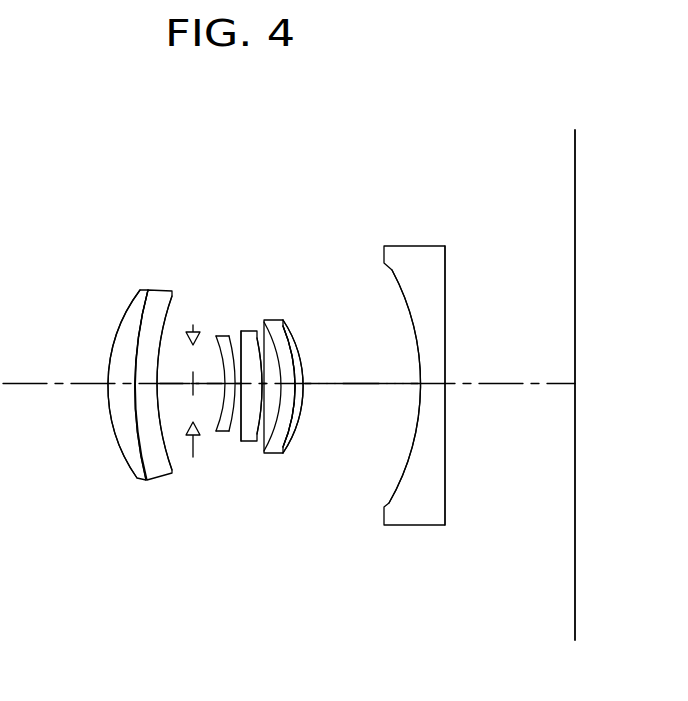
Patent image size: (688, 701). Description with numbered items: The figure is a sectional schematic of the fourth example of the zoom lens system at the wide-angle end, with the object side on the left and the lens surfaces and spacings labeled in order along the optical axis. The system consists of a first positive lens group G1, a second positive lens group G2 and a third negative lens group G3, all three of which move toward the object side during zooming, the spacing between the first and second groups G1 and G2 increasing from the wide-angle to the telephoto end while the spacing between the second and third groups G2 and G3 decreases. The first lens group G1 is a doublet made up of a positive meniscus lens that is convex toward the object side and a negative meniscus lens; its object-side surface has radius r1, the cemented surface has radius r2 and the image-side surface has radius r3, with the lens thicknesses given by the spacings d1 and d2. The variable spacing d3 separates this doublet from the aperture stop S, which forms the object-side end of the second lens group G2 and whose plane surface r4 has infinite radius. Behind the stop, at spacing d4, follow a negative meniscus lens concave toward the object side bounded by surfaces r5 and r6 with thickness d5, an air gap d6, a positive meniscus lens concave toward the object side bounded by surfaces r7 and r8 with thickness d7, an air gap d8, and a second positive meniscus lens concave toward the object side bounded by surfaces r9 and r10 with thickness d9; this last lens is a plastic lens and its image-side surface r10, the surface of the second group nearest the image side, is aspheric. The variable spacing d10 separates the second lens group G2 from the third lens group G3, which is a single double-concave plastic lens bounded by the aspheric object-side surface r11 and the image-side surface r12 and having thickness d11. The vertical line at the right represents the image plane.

The first positive lens group G1 is at (170, 215).
The second positive lens group G2 is at (287, 215).
The third negative lens group G3 is at (450, 218).
The aperture stop S is at (193, 325).
The radius of curvature of first lens surface r1 is at (117, 328).
The radius of curvature of second lens surface r2 is at (138, 320).
The radius of curvature of third lens surface r3 is at (164, 318).
The radius of curvature of fourth surface (stop) r4 is at (215, 337).
The radius of curvature of fifth lens surface r5 is at (218, 362).
The radius of curvature of sixth lens surface r6 is at (241, 331).
The radius of curvature of seventh lens surface r7 is at (244, 338).
The radius of curvature of eighth lens surface r8 is at (264, 320).
The radius of curvature of ninth lens surface r9 is at (284, 326).
The radius of curvature of tenth lens surface r10 is at (298, 352).
The radius of curvature of eleventh lens surface r11 is at (395, 290).
The radius of curvature of twelfth lens surface r12 is at (447, 290).
The first surface spacing d1 is at (124, 395).
The second surface spacing d2 is at (145, 403).
The third surface spacing d3 is at (174, 399).
The fourth surface spacing d4 is at (208, 404).
The fifth surface spacing d5 is at (230, 422).
The sixth surface spacing d6 is at (249, 415).
The seventh surface spacing d7 is at (256, 410).
The eighth surface spacing d8 is at (273, 425).
The ninth surface spacing d9 is at (289, 408).
The tenth surface spacing d10 is at (361, 404).
The eleventh surface spacing d11 is at (432, 387).